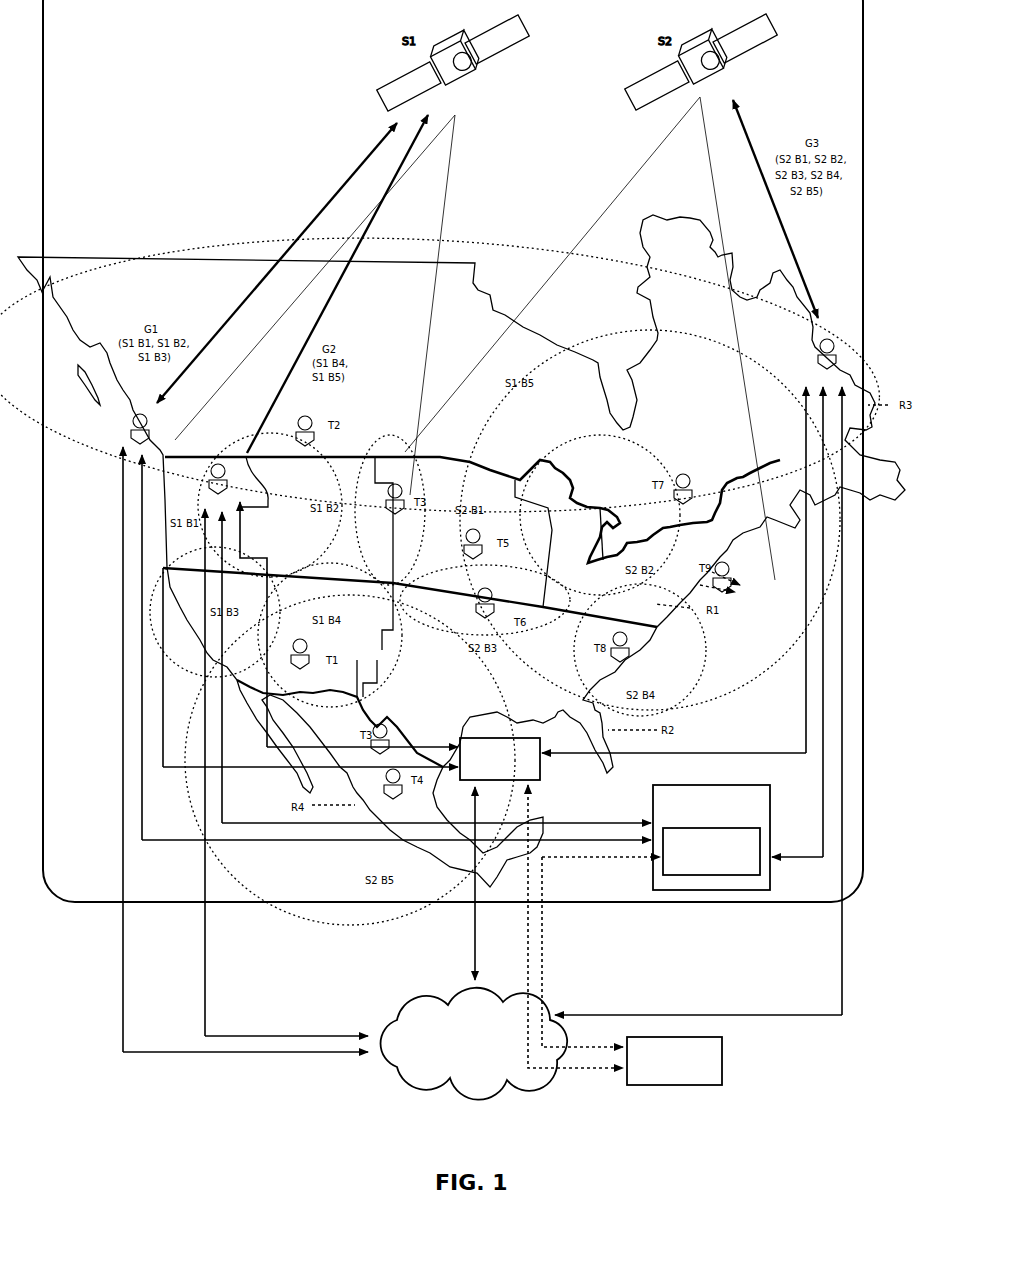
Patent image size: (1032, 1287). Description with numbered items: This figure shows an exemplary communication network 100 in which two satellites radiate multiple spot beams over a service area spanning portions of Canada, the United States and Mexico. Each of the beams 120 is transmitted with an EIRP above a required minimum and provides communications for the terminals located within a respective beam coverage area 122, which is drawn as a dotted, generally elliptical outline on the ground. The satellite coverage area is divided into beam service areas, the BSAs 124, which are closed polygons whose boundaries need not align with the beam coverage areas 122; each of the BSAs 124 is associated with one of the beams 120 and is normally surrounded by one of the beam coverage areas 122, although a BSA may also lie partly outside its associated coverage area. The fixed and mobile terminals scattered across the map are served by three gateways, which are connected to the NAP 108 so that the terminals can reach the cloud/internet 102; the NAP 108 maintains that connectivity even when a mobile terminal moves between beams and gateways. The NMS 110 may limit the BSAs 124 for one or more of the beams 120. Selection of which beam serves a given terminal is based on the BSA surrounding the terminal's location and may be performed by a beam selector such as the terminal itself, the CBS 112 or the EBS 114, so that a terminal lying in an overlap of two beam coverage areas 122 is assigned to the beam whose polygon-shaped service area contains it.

The communication network 100 is at (866, 152).
The cloud/internet 102 is at (474, 1044).
The NAP 108 is at (500, 759).
The NMS 110 is at (711, 837).
The CBS 112 is at (711, 851).
The EBS 114 is at (674, 1061).
The beams 120 is at (367, 153).
The beam coverage areas 122 is at (247, 238).
The BSAs 124 is at (138, 255).